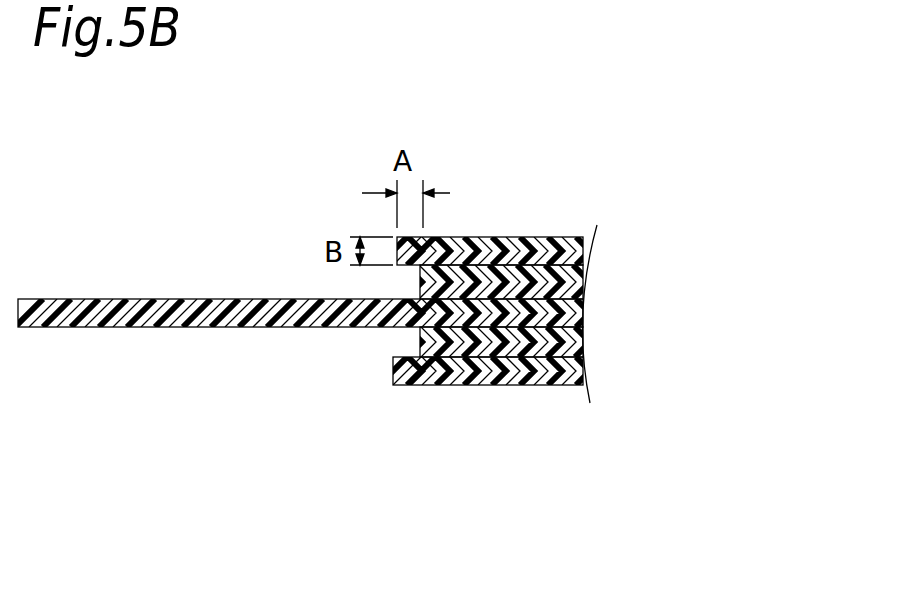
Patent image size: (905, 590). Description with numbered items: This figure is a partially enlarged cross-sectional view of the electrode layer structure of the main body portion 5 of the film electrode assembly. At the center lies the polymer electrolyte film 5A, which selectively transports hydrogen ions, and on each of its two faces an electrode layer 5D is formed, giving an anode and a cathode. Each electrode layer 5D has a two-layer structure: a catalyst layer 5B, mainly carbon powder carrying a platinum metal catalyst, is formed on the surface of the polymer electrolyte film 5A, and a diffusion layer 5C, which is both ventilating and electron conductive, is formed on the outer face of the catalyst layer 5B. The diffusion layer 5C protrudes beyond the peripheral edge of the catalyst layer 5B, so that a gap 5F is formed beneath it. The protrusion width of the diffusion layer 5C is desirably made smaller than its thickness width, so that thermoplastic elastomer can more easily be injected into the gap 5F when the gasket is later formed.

The main body portion of the film electrode assembly 5 is at (748, 243).
The polymer electrolyte film 5A is at (575, 310).
The catalyst layer 5B is at (572, 288).
The diffusion layer 5C is at (575, 258).
The electrode layer 5D is at (688, 217).
The gap 5F is at (407, 278).